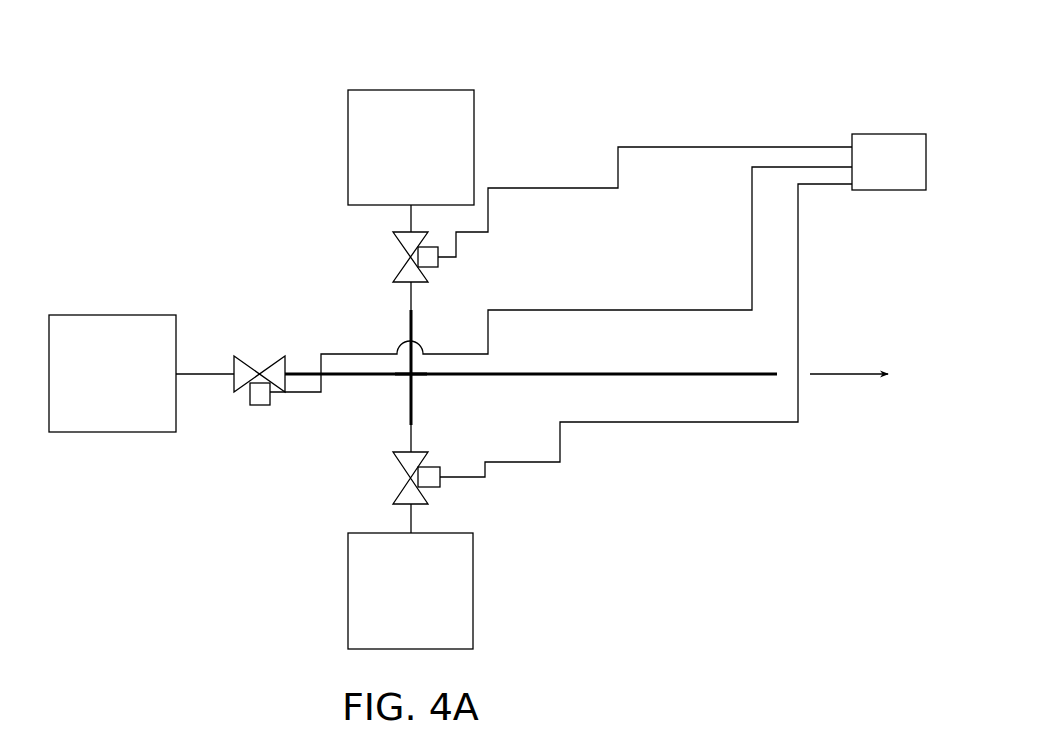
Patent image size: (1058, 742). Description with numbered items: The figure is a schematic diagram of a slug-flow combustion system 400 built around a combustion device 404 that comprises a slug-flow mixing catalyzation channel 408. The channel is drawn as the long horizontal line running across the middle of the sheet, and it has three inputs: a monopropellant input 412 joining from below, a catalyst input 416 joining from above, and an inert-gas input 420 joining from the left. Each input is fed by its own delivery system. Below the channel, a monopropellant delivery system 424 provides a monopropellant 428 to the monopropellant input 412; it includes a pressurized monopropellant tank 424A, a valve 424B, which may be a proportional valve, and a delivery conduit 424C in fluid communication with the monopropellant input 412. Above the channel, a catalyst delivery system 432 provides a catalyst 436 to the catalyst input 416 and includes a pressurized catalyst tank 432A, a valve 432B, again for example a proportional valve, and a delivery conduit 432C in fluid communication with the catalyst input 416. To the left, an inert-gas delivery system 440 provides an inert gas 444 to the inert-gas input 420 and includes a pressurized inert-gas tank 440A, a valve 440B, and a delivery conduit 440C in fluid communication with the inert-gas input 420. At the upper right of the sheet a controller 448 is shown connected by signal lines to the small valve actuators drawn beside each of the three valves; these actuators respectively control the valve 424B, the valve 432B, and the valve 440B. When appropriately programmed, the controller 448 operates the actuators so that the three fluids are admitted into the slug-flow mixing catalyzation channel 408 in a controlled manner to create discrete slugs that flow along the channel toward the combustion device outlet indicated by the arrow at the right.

The slug-flow combustion system 400 is at (150, 48).
The combustion device 404 is at (623, 302).
The slug-flow mixing catalyzation channel 408 is at (662, 376).
The monopropellant input 412 is at (428, 418).
The catalyst input 416 is at (422, 325).
The inert-gas input 420 is at (368, 393).
The monopropellant delivery system 424 is at (405, 542).
The pressurized monopropellant tank 424A is at (475, 591).
The valve 424B is at (393, 500).
The delivery conduit 424C is at (412, 527).
The monopropellant 428 is at (460, 603).
The catalyst delivery system 432 is at (414, 173).
The pressurized catalyst tank 432A is at (355, 120).
The valve 432B is at (393, 237).
The delivery conduit 432C is at (408, 306).
The catalyst 436 is at (428, 110).
The inert-gas delivery system 440 is at (164, 339).
The pressurized inert-gas tank 440A is at (109, 367).
The valve 440B is at (242, 360).
The delivery conduit 440C is at (207, 378).
The inert gas 444 is at (117, 413).
The controller 448 is at (905, 133).